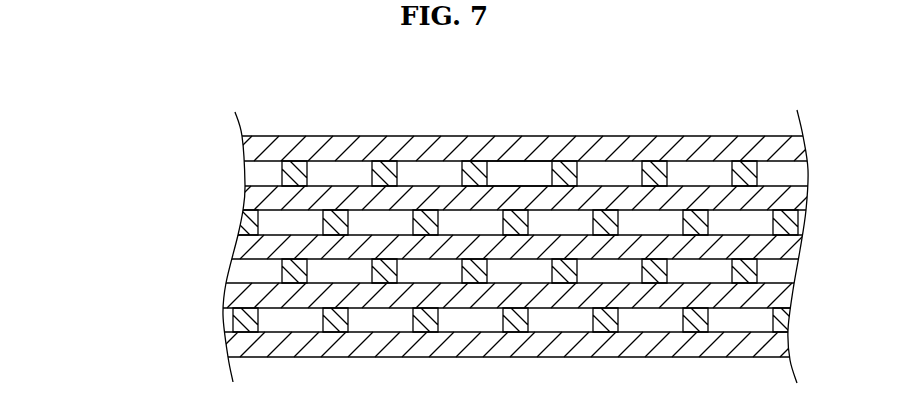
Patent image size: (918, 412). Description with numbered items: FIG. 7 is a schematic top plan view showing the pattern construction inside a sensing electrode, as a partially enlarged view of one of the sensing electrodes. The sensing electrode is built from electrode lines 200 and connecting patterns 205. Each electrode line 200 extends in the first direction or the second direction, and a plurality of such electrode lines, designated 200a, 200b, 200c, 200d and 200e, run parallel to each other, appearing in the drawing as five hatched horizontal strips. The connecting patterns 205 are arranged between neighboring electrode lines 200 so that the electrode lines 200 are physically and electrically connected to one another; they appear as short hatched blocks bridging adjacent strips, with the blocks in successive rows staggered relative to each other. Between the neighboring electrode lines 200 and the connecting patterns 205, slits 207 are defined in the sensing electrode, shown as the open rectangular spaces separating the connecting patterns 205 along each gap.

The electrode line 200 is at (128, 147).
The electrode line 200a is at (243, 157).
The electrode line 200b is at (244, 204).
The electrode line 200c is at (237, 248).
The electrode line 200d is at (226, 301).
The electrode line 200e is at (225, 348).
The connecting pattern 205 is at (458, 172).
The slit 207 is at (525, 170).